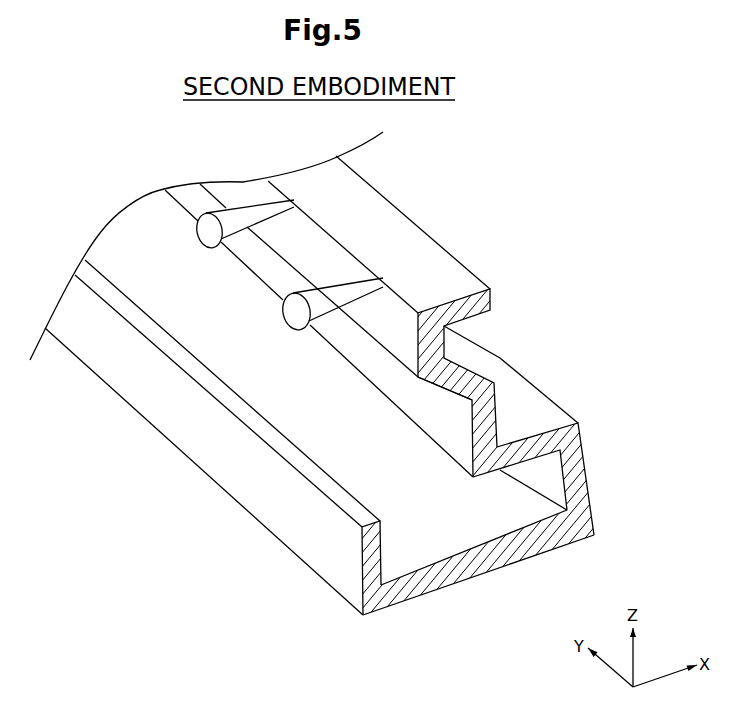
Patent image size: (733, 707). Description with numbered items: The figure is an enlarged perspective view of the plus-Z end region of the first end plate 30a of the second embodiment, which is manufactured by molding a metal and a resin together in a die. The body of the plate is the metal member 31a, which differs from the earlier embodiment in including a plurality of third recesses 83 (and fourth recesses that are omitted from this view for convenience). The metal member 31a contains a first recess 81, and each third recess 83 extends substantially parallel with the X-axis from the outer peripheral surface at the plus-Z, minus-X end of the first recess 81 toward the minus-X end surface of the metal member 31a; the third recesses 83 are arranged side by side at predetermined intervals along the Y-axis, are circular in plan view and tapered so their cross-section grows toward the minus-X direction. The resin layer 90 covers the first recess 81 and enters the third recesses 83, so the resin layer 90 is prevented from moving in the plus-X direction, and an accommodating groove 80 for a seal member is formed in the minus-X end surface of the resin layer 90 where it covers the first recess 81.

The first end plate 30a is at (78, 166).
The accommodating groove 80 is at (451, 349).
The first recess 81 is at (433, 397).
The third recess 83 is at (204, 247).
The metal member 31a is at (347, 572).
The resin layer 90 is at (384, 612).